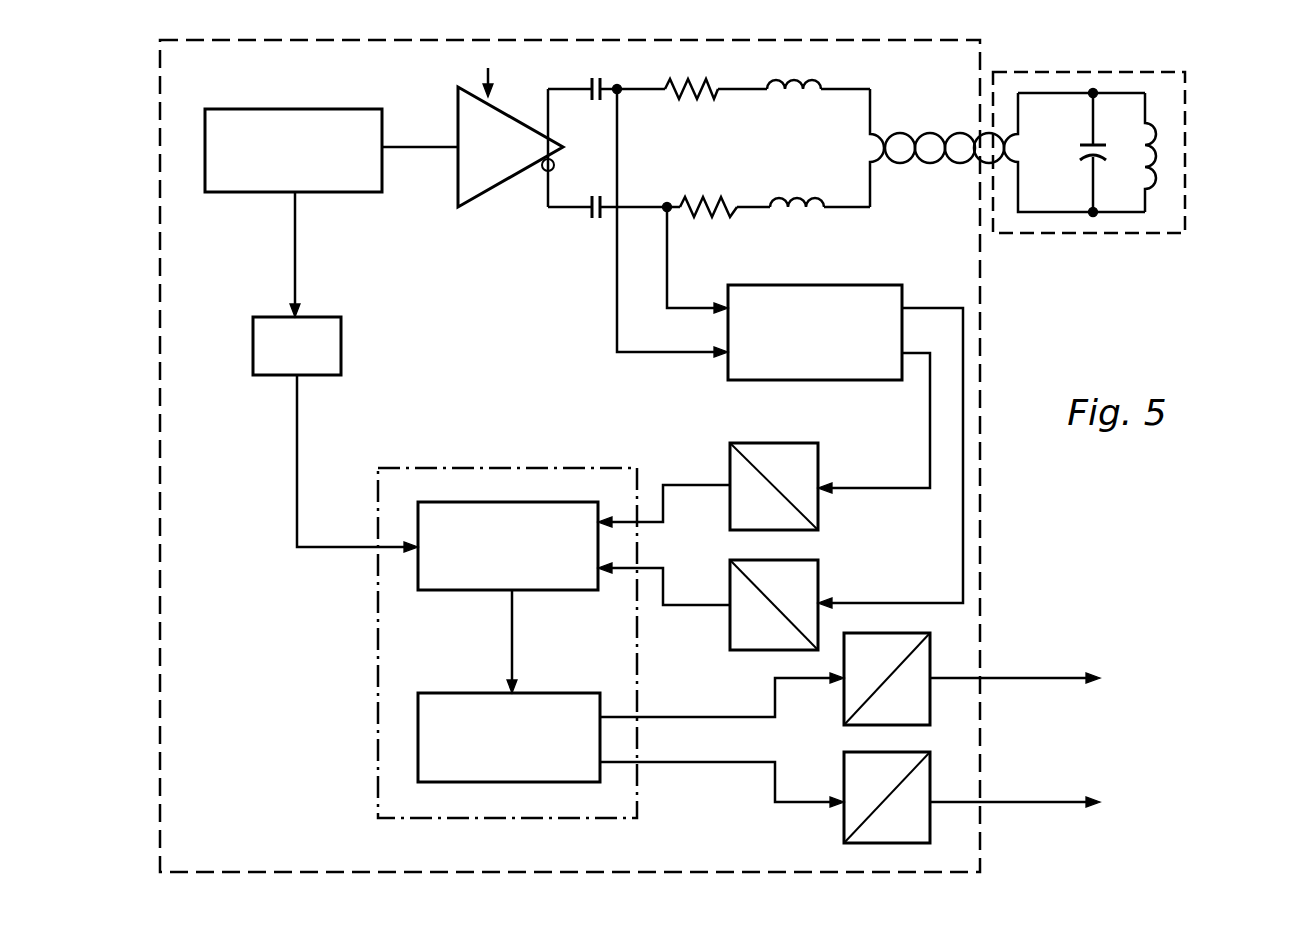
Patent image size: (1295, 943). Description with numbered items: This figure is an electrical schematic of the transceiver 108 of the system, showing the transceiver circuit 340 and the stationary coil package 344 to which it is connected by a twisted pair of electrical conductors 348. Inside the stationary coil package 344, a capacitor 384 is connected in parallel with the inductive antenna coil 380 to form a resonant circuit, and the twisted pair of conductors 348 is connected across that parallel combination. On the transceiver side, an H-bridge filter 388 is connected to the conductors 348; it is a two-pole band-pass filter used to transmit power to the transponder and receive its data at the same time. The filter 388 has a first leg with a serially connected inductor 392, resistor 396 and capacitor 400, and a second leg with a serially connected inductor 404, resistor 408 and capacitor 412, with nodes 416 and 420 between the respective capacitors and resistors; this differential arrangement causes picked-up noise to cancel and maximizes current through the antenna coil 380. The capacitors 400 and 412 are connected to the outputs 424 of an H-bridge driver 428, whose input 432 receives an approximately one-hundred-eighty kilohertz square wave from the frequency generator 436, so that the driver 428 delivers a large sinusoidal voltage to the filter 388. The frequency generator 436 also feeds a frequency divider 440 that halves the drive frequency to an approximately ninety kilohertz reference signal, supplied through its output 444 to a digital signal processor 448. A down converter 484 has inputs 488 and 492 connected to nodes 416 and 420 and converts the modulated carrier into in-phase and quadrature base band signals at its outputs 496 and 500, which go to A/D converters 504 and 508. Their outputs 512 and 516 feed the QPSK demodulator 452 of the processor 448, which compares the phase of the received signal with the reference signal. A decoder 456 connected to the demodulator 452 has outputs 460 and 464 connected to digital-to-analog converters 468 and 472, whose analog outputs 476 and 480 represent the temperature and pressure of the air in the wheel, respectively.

The transceiver 108 is at (1060, 330).
The transceiver circuit 340 is at (982, 517).
The stationary coil package 344 is at (1190, 212).
The twisted pair of electrical conductors 348 is at (905, 163).
The inductive antenna coil 380 is at (1157, 160).
The capacitor 384 is at (1082, 148).
The H-bridge filter 388 is at (800, 54).
The inductor 392 is at (803, 95).
The resistor 396 is at (703, 99).
The capacitor 400 is at (597, 77).
The inductor 404 is at (818, 200).
The resistor 408 is at (713, 203).
The capacitor 412 is at (597, 219).
The node 416 is at (667, 203).
The node 420 is at (619, 88).
The outputs of H-bridge driver 424 is at (557, 160).
The H-bridge driver 428 is at (478, 207).
The input 432 is at (458, 150).
The frequency generator 436 is at (296, 109).
The frequency divider 440 is at (330, 333).
The output 444 is at (300, 378).
The digital signal processor 448 is at (510, 468).
The QPSK demodulator 452 is at (562, 502).
The decoder 456 is at (452, 695).
The output 460 is at (602, 714).
The output 464 is at (604, 765).
The digital-to-analog converter 468 is at (932, 638).
The digital-to-analog converter 472 is at (932, 770).
The analog output 476 is at (932, 676).
The analog output 480 is at (932, 808).
The down converter 484 is at (850, 285).
The input 488 is at (723, 305).
The input 492 is at (722, 358).
The output 496 is at (905, 302).
The output 500 is at (905, 350).
The A/D converter 504 is at (788, 443).
The A/D converter 508 is at (820, 553).
The output 512 is at (718, 484).
The output 516 is at (727, 608).